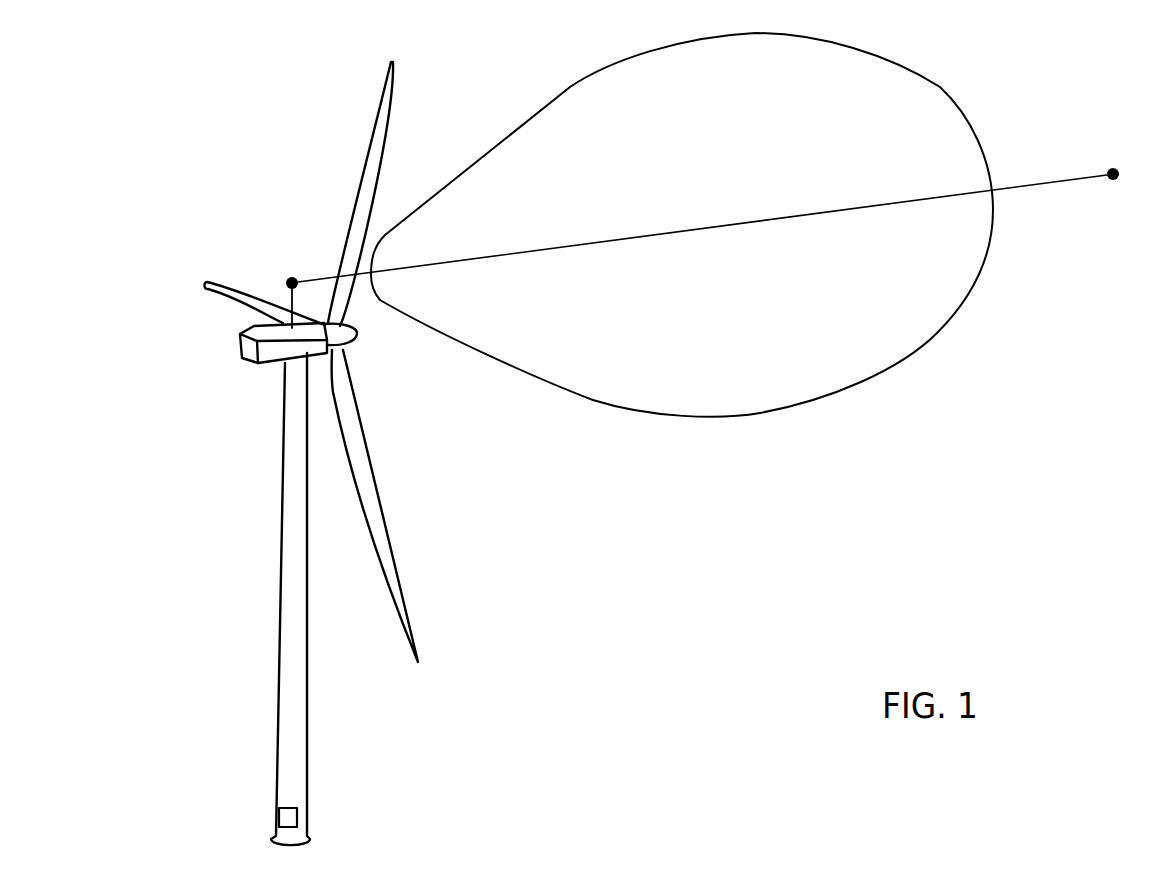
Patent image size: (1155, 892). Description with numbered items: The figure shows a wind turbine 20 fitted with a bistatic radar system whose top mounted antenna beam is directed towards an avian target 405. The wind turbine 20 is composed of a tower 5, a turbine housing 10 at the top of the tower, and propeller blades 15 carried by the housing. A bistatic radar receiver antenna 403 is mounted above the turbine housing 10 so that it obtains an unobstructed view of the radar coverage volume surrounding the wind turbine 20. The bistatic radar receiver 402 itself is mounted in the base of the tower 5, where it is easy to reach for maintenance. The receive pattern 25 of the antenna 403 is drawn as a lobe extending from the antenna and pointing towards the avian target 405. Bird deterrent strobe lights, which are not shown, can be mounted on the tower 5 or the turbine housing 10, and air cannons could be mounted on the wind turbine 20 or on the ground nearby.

The tower 5 is at (283, 495).
The turbine housing 10 is at (250, 345).
The propeller blades 15 is at (395, 538).
The wind turbine 20 is at (235, 630).
The receive pattern 25 is at (602, 403).
The bistatic radar receiver 402 is at (288, 820).
The bistatic radar receiver antenna 403 is at (288, 279).
The avian target 405 is at (1110, 181).